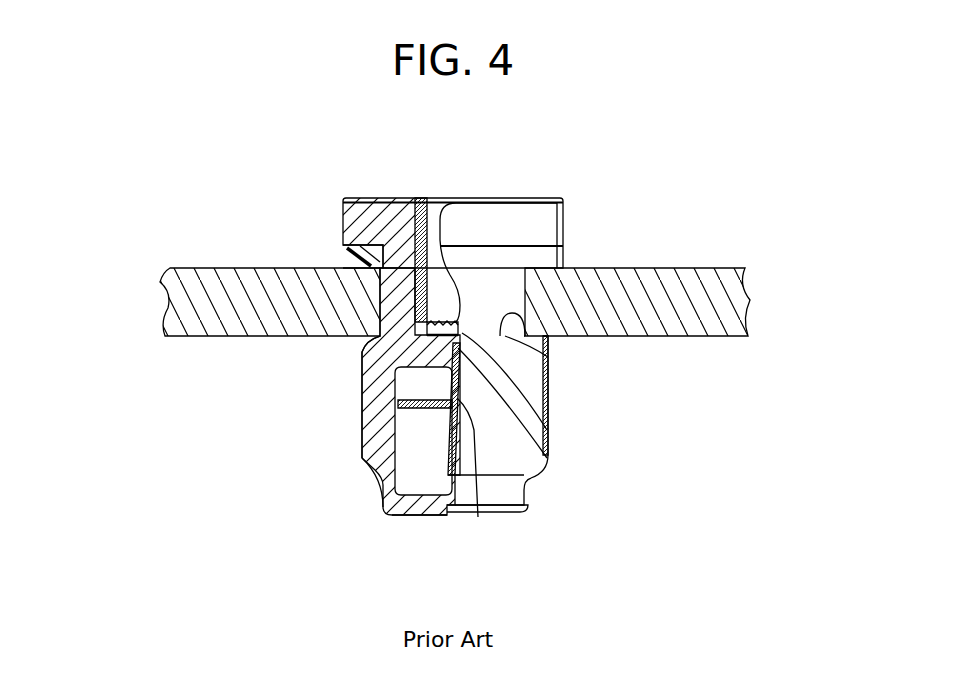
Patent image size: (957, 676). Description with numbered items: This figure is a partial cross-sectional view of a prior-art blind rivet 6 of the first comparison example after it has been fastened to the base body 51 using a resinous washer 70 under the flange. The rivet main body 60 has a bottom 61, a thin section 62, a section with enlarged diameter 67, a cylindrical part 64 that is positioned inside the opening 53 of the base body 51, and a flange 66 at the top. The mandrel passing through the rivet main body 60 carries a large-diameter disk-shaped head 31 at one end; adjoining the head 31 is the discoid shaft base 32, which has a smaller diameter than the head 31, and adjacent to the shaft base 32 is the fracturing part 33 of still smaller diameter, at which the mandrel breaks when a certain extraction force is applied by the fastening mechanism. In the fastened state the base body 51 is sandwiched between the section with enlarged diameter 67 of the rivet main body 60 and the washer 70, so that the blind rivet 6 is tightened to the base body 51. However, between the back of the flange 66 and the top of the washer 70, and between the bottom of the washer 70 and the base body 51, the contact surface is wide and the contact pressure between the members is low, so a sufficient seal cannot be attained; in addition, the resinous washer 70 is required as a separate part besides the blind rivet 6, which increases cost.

The blind rivet 6 is at (684, 240).
The head 31 is at (480, 516).
The shaft base 32 is at (553, 458).
The fracturing part 33 is at (548, 425).
The base body 51 is at (705, 322).
The opening 53 is at (522, 332).
The rivet main body 60 is at (556, 524).
The bottom 61 is at (420, 516).
The thin section 62 is at (375, 490).
The cylindrical part 64 is at (362, 346).
The flange 66 is at (367, 198).
The section with enlarged diameter 67 is at (362, 432).
The washer 70 is at (343, 262).